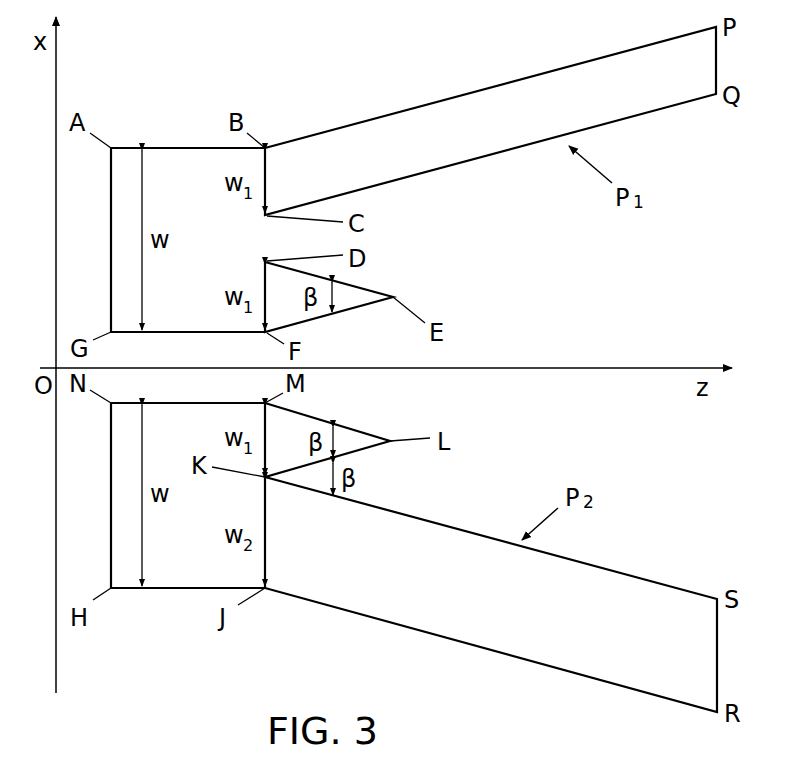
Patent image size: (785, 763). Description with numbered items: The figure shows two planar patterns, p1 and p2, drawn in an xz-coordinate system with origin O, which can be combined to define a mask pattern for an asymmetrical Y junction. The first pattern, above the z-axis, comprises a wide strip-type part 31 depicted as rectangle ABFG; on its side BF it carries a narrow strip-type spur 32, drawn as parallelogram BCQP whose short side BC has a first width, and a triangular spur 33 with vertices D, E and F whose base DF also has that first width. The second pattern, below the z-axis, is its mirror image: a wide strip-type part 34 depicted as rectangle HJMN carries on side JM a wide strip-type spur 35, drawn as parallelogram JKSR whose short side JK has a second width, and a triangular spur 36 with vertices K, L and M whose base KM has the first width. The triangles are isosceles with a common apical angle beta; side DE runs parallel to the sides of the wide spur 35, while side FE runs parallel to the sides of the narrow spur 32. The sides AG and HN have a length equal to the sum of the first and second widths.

The wide strip-type part 31 is at (190, 180).
The narrow strip-type spur 32 is at (467, 119).
The triangular spur 33 is at (283, 308).
The wide strip-type part 34 is at (185, 558).
The wide strip-type spur 35 is at (455, 612).
The triangular spur 36 is at (288, 442).